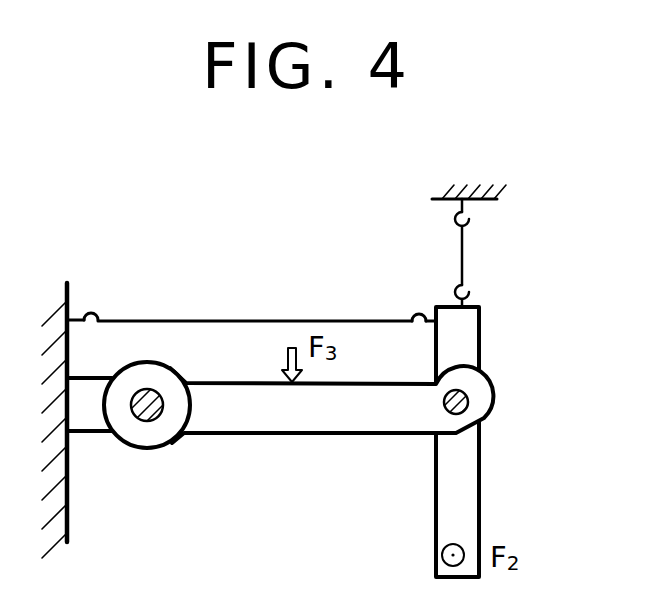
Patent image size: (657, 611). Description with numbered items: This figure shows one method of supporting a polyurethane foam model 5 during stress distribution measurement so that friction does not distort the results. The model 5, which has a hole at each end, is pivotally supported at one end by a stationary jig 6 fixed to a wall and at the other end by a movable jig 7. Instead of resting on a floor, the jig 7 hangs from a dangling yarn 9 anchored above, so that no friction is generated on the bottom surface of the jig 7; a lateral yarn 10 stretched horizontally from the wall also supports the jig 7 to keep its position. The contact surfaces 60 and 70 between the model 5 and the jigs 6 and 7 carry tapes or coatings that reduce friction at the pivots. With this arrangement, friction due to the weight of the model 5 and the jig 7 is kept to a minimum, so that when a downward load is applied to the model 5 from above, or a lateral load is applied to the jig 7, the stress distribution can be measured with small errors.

The model 5 is at (327, 408).
The stationary jig 6 is at (98, 378).
The movable jig 7 is at (458, 489).
The yarn 9 is at (462, 255).
The lateral yarn 10 is at (265, 320).
The contact surface 60 is at (160, 410).
The contact surface 70 is at (468, 400).